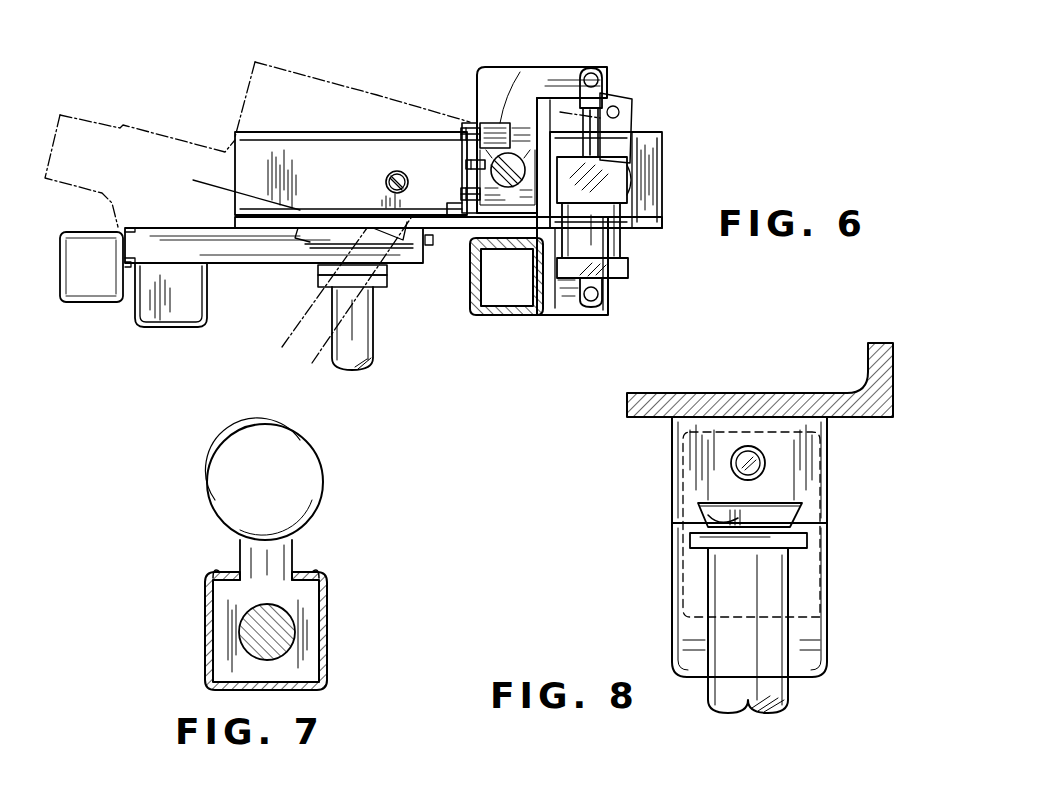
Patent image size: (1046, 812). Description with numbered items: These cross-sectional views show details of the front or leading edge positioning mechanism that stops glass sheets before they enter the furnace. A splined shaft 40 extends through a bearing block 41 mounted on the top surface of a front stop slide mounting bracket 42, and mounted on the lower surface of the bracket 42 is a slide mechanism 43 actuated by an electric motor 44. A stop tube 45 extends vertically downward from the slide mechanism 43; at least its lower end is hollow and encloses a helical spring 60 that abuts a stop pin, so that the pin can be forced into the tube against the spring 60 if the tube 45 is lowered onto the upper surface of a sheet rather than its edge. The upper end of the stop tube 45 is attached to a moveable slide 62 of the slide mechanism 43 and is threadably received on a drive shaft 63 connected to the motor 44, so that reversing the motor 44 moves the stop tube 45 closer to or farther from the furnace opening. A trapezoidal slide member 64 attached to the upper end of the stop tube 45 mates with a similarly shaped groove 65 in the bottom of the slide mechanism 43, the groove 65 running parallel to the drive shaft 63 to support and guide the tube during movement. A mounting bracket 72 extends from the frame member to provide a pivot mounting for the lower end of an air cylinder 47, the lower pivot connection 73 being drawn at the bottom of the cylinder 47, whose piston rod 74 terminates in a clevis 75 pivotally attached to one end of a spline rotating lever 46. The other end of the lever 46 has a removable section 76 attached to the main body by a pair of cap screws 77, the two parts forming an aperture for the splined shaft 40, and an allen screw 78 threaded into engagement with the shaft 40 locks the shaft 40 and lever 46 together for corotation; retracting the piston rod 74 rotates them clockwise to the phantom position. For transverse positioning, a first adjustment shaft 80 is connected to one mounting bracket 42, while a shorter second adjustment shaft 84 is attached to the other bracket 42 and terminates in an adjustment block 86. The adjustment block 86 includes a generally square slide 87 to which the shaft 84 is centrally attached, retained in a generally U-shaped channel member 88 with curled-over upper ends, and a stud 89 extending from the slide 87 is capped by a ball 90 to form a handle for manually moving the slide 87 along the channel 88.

In FIG. 6, the splined shaft 40 is at (505, 187).
In FIG. 6, the bearing block 41 is at (458, 216).
In FIG. 6, the front stop slide mounting bracket 42 is at (660, 160).
In FIG. 8, the front stop slide mounting bracket 42 is at (884, 365).
In FIG. 6, the slide mechanism 43 is at (243, 262).
In FIG. 8, the slide mechanism 43 is at (680, 433).
In FIG. 6, the electric motor 44 is at (90, 293).
In FIG. 8, the electric motor 44 is at (815, 630).
In FIG. 6, the stop tube 45 is at (368, 354).
In FIG. 8, the stop tube 45 is at (785, 688).
In FIG. 6, the spline rotating lever 46 is at (483, 80).
In FIG. 6, the air cylinder 47 is at (610, 245).
In FIG. 6, the helical spring 60 is at (505, 317).
In FIG. 8, the moveable slide 62 is at (707, 530).
In FIG. 8, the drive shaft 63 is at (762, 462).
In FIG. 8, the trapezoidal slide member 64 is at (785, 520).
In FIG. 8, the groove 65 is at (723, 524).
In FIG. 6, the mounting bracket 72 is at (572, 312).
In FIG. 6, the lower clevis 73 is at (604, 288).
In FIG. 6, the piston rod 74 is at (604, 128).
In FIG. 6, the clevis 75 is at (604, 84).
In FIG. 6, the removable section 76 is at (500, 125).
In FIG. 6, the cap screws 77 is at (467, 128).
In FIG. 6, the allen screw 78 is at (470, 165).
In FIG. 6, the first adjustment shaft 80 is at (385, 179).
In FIG. 7, the second adjustment shaft 84 is at (247, 646).
In FIG. 7, the adjustment block 86 is at (350, 597).
In FIG. 7, the slide 87 is at (306, 658).
In FIG. 7, the U-shaped channel member 88 is at (207, 620).
In FIG. 7, the stud 89 is at (289, 556).
In FIG. 7, the ball 90 is at (210, 483).